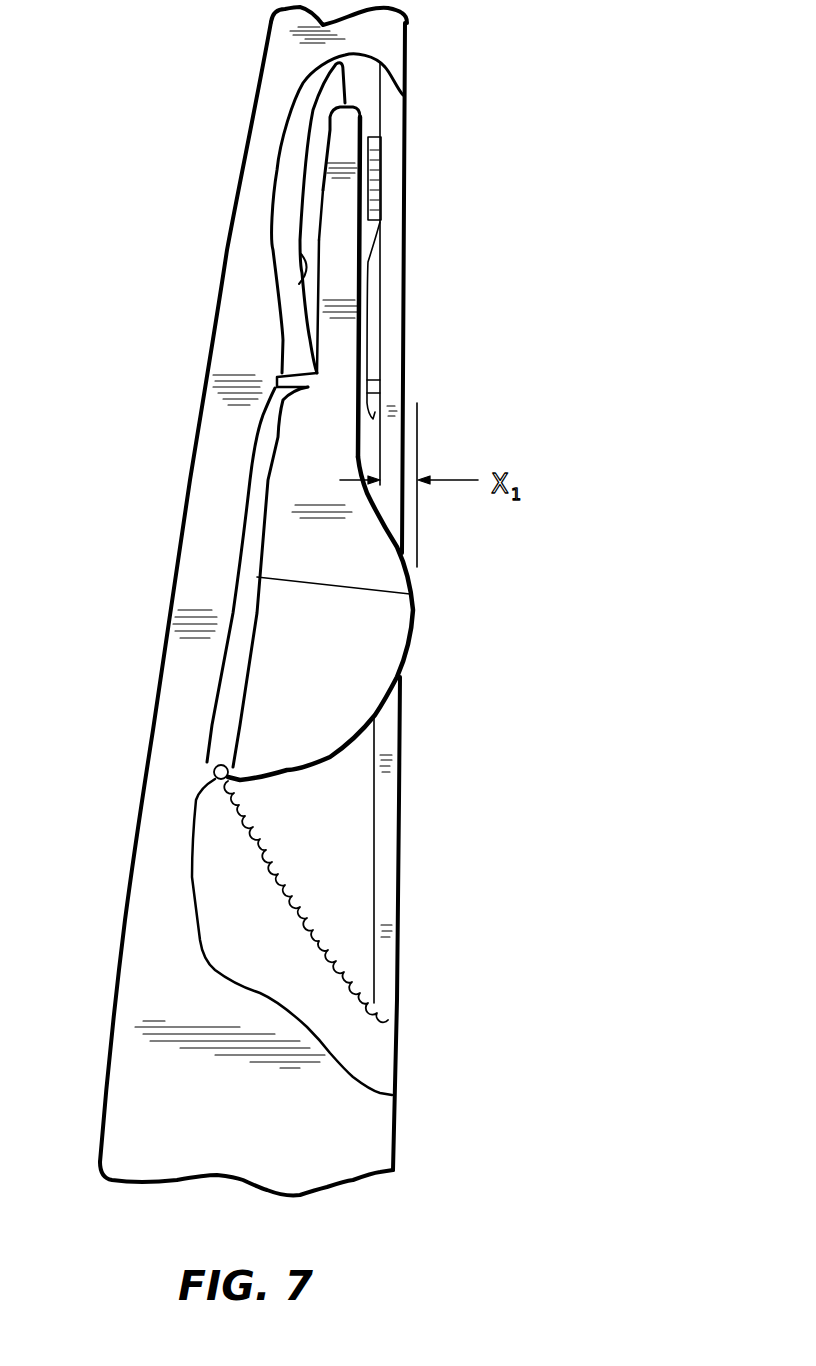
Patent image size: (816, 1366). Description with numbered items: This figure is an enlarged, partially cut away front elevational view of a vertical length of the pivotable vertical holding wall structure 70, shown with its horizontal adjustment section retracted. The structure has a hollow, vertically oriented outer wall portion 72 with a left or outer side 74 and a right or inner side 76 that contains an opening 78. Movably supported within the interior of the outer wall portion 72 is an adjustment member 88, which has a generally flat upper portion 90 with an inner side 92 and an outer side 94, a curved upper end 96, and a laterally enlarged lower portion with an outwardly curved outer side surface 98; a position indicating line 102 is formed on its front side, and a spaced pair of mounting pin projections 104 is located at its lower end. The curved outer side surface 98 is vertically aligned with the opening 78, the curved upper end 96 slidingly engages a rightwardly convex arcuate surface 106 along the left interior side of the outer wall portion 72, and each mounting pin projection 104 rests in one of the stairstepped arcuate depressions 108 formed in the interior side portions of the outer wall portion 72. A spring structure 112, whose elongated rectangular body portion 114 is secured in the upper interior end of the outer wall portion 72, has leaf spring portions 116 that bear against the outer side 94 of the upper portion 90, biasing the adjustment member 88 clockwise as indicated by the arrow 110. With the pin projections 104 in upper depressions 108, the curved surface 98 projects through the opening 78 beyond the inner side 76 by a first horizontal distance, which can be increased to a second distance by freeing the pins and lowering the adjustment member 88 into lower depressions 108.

The vertical holding wall structure 70 is at (128, 670).
The outer wall portion 72 is at (165, 763).
The outer side 74 is at (124, 913).
The inner side 76 is at (396, 1140).
The opening 78 is at (383, 847).
The adjustment member 88 is at (242, 513).
The upper portion 90 is at (340, 220).
The inner side 92 is at (303, 180).
The outer side 94 is at (366, 242).
The curved upper end 96 is at (318, 66).
The outwardly curved outer side surface 98 is at (413, 633).
The position indicating line 102 is at (312, 586).
The mounting pin projections 104 is at (214, 777).
The rightwardly convex arcuate surface 106 is at (300, 257).
The arcuate depressions 108 is at (243, 810).
The arrow 110 is at (352, 403).
The spring structure 112 is at (368, 99).
The elongated rectangular body portion 114 is at (377, 173).
The leaf spring portions 116 is at (367, 357).